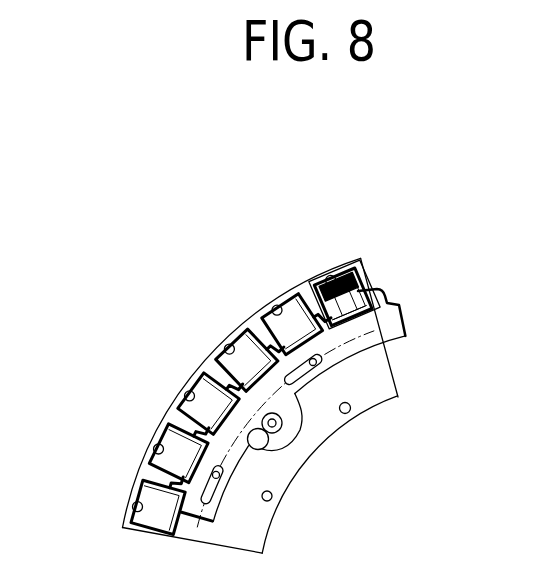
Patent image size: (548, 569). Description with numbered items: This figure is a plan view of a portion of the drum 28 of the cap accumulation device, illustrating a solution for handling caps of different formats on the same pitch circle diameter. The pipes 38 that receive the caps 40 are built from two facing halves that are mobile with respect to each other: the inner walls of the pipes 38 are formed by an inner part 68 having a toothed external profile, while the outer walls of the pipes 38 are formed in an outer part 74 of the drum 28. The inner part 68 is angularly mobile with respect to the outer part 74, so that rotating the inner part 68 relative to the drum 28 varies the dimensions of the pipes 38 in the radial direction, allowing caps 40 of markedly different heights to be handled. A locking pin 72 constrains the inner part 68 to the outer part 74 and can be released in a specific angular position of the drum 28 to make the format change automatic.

The drum 28 is at (172, 265).
The pipes 38 is at (337, 272).
The caps 40 is at (359, 265).
The inner part 68 is at (397, 316).
The locking pin 72 is at (287, 421).
The outer part 74 is at (207, 368).